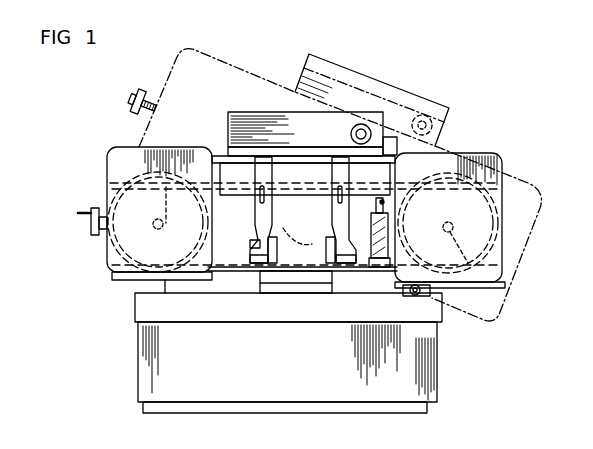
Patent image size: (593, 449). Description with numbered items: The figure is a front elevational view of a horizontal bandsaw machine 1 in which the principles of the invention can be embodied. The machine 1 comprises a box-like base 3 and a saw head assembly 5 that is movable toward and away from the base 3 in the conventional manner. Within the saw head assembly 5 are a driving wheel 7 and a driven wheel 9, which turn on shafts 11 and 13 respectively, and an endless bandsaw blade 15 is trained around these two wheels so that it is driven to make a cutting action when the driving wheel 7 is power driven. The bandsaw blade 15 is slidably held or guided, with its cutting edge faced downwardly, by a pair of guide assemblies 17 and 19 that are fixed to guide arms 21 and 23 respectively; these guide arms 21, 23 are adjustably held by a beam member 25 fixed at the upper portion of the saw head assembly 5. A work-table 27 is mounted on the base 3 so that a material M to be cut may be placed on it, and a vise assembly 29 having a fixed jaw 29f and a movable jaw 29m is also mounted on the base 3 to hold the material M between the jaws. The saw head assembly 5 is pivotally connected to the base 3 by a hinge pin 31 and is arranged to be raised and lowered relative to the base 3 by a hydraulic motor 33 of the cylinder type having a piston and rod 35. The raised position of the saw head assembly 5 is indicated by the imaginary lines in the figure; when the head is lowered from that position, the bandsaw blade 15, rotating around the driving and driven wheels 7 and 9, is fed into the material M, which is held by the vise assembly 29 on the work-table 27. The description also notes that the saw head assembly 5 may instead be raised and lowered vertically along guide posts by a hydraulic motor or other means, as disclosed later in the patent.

The horizontal bandsaw machine 1 is at (107, 344).
The base 3 is at (219, 392).
The saw head assembly 5 is at (458, 141).
The driving wheel 7 is at (500, 252).
The driven wheel 9 is at (125, 191).
The shaft 11 is at (506, 281).
The shaft 13 is at (120, 248).
The endless bandsaw blade 15 is at (213, 274).
The guide assembly 17 is at (349, 265).
The guide assembly 19 is at (256, 270).
The guide arm 21 is at (341, 162).
The guide arm 23 is at (263, 157).
The beam member 25 is at (298, 168).
The work-table 27 is at (297, 280).
The vise assembly 29 is at (262, 241).
The movable jaw 29m is at (265, 268).
The fixed jaw 29f is at (326, 265).
The hinge pin 31 is at (430, 292).
The hydraulic motor 33 is at (379, 267).
The piston and rod 35 is at (386, 208).
The material M is at (301, 240).